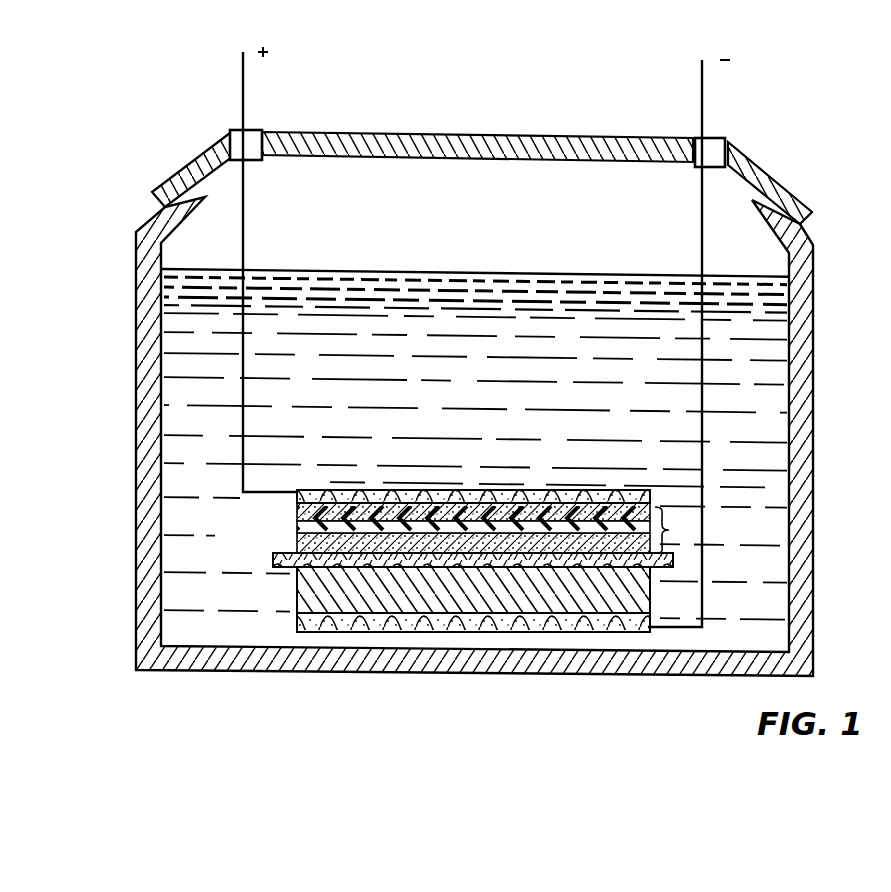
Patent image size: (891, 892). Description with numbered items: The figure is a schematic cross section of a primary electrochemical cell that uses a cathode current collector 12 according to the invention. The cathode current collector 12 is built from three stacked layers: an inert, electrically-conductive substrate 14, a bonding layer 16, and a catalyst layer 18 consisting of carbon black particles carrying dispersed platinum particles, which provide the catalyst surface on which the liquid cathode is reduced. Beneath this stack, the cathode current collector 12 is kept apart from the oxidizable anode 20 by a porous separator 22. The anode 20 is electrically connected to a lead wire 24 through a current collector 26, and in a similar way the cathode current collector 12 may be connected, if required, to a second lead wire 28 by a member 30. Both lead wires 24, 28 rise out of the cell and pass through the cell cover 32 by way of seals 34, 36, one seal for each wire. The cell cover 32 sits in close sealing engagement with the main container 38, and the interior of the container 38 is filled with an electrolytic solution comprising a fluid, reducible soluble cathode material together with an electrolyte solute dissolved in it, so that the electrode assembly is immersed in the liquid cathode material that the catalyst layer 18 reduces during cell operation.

The cathode current collector 12 is at (674, 530).
The inert, electrically-conductive substrate 14 is at (297, 512).
The bonding layer 16 is at (297, 527).
The catalyst layer 18 is at (297, 547).
The oxidizable anode 20 is at (330, 608).
The porous separator 22 is at (275, 560).
The lead wire 24 is at (707, 217).
The current collector 26 is at (650, 630).
The lead wire 28 is at (248, 237).
The member 30 is at (318, 488).
The cell cover 32 is at (430, 133).
The seal 34 is at (702, 137).
The seal 36 is at (254, 129).
The main container 38 is at (138, 356).